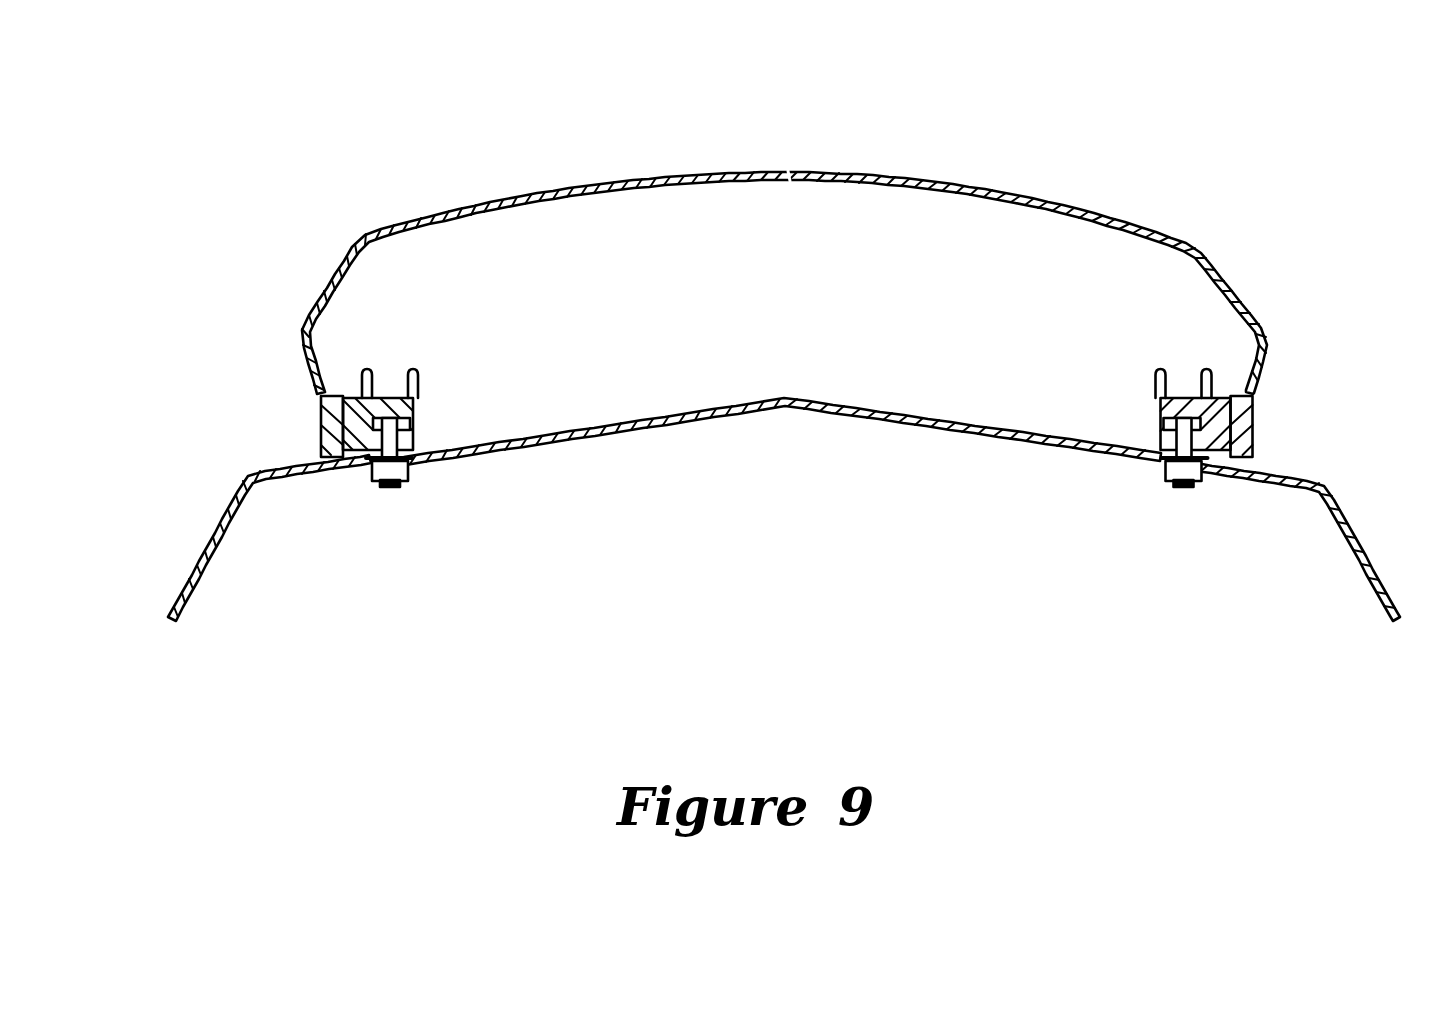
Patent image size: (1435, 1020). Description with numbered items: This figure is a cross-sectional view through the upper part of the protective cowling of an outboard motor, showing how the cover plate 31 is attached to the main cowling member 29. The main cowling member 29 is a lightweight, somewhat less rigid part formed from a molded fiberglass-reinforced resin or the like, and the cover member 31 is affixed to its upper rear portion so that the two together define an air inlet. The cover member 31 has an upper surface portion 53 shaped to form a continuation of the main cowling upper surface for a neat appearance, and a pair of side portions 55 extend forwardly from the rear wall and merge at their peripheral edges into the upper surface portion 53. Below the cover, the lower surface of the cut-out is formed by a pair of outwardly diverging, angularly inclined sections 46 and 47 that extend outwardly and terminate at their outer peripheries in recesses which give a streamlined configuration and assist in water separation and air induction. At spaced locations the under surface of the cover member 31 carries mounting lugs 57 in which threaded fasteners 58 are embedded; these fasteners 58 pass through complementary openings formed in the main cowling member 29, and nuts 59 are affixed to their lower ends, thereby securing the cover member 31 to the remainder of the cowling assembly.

The main cowling member 29 is at (210, 530).
The cover plate 31 is at (676, 168).
The angularly inclined section 46 is at (637, 415).
The angularly inclined section 47 is at (840, 407).
The upper surface portion 53 is at (340, 283).
The side portion 55 is at (1252, 302).
The mounting lug 57 is at (418, 386).
The threaded fastener 58 is at (418, 420).
The nut 59 is at (367, 477).